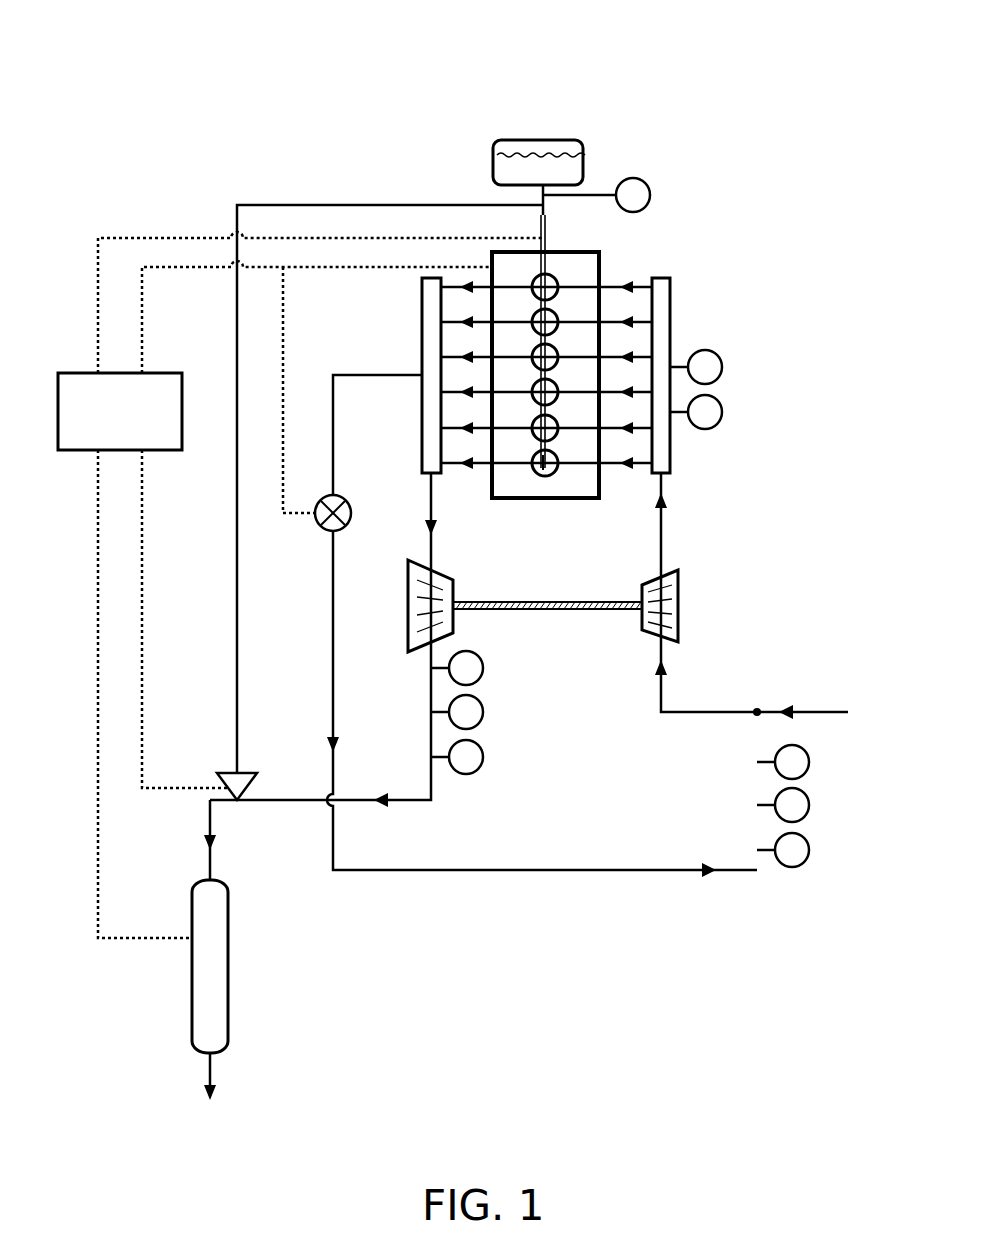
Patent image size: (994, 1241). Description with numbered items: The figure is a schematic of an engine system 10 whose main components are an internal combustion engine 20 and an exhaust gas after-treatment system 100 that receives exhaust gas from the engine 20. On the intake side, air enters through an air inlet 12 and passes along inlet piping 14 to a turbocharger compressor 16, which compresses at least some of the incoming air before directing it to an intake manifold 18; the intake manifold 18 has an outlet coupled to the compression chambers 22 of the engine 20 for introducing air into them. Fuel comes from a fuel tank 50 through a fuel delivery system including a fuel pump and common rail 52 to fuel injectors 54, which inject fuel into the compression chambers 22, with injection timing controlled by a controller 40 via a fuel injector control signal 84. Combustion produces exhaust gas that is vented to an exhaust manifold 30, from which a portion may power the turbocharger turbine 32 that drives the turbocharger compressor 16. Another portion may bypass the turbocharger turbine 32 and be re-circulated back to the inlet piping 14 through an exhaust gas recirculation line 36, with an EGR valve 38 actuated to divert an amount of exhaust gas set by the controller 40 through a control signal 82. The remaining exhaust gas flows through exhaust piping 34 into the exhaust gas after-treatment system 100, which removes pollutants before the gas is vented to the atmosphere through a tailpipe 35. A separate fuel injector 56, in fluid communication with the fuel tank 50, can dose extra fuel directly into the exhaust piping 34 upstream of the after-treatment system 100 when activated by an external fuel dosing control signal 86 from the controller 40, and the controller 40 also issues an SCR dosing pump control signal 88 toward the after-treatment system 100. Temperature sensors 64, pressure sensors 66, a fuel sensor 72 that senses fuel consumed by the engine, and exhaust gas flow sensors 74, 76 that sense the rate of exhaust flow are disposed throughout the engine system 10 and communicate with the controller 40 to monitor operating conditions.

The engine system 10 is at (180, 73).
The air inlet 12 is at (838, 712).
The inlet piping 14 is at (730, 712).
The turbocharger compressor 16 is at (679, 590).
The intake manifold 18 is at (670, 298).
The internal combustion engine 20 is at (600, 270).
The compression chambers 22 is at (548, 478).
The exhaust manifold 30 is at (420, 299).
The turbocharger turbine 32 is at (454, 590).
The exhaust piping 34 is at (408, 803).
The tailpipe 35 is at (211, 1072).
The exhaust gas recirculation (EGR) line 36 is at (332, 648).
The EGR valve 38 is at (338, 530).
The controller 40 is at (68, 452).
The fuel tank 50 is at (580, 144).
The fuel pump and common rail 52 is at (548, 246).
The fuel injectors 54 is at (556, 466).
The fuel injector 56 is at (246, 776).
The temperature sensors 64 is at (722, 370).
The pressure sensors 66 is at (722, 415).
The fuel sensor 72 is at (648, 178).
The exhaust gas flow sensor 74 is at (483, 760).
The exhaust gas flow sensor 76 is at (809, 853).
The control signal 82 is at (144, 325).
The fuel injector control signal 84 is at (104, 239).
The external fuel dosing control signal 86 is at (174, 784).
The SCR dosing pump control signal 88 is at (136, 936).
The exhaust gas after-treatment system 100 is at (228, 950).